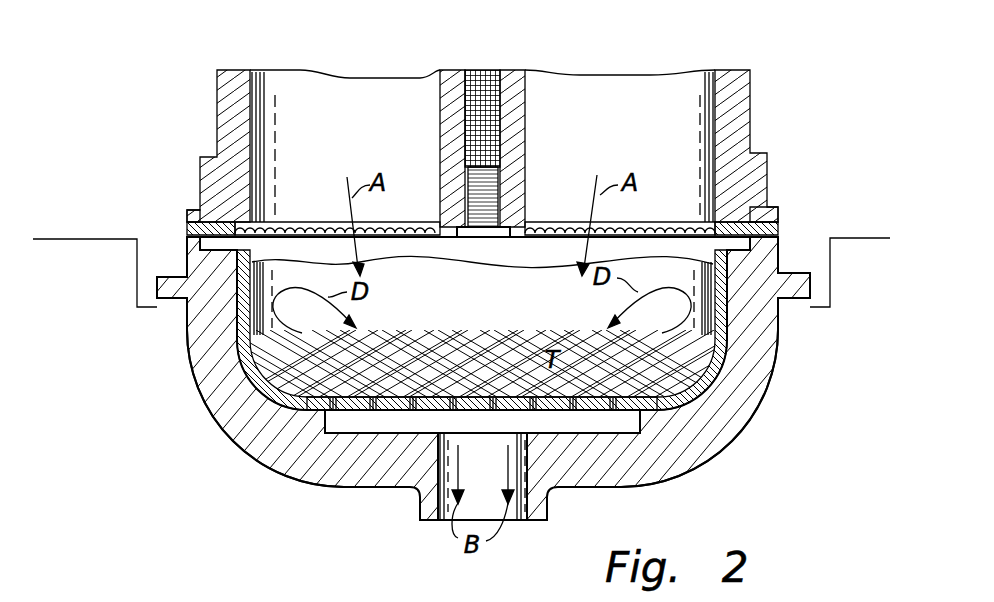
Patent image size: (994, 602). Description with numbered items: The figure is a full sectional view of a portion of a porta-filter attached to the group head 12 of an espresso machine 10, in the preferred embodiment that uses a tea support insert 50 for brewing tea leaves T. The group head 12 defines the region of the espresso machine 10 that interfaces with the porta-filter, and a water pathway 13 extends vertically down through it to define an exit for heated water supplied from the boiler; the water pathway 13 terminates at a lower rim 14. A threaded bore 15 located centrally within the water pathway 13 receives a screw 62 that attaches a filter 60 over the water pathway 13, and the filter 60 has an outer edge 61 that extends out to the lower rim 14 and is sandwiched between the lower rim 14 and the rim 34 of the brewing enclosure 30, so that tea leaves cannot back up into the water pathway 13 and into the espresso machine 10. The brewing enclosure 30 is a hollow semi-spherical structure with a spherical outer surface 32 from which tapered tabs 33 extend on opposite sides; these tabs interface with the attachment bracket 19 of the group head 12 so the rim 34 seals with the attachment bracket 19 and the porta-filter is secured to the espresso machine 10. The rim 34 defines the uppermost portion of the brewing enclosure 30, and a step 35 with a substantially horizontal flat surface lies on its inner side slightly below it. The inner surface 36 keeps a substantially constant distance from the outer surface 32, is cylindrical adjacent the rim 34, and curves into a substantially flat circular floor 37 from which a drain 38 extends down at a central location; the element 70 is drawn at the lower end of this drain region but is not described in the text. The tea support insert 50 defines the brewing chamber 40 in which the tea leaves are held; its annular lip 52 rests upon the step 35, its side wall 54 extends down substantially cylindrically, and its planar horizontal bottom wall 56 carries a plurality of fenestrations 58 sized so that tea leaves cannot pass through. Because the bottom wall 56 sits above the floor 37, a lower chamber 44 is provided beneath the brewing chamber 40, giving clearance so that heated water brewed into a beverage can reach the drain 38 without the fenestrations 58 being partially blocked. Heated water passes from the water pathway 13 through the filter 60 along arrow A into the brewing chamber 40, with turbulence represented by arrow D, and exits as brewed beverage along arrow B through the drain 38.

The espresso machine 10 is at (833, 116).
The group head 12 is at (222, 110).
The water pathway 13 is at (309, 135).
The lower rim 14 is at (187, 215).
The threaded bore 15 is at (477, 83).
The attachment bracket 19 is at (152, 255).
The brewing enclosure 30 is at (147, 400).
The outer surface 32 is at (210, 405).
The tapered tabs 33 is at (157, 287).
The rim 34 is at (778, 240).
The step 35 is at (770, 250).
The inner surface 36 is at (645, 470).
The floor 37 is at (600, 435).
The drain 38 is at (468, 471).
The brewing chamber 40 is at (456, 306).
The lower chamber 44 is at (567, 425).
The tea support insert 50 is at (348, 420).
The annular lip 52 is at (735, 305).
The side wall 54 is at (712, 340).
The bottom wall 56 is at (347, 435).
The fenestrations 58 is at (392, 433).
The filter 60 is at (273, 215).
The outer edge 61 is at (187, 228).
The screw 62 is at (498, 178).
The drain outlet 70 is at (418, 515).